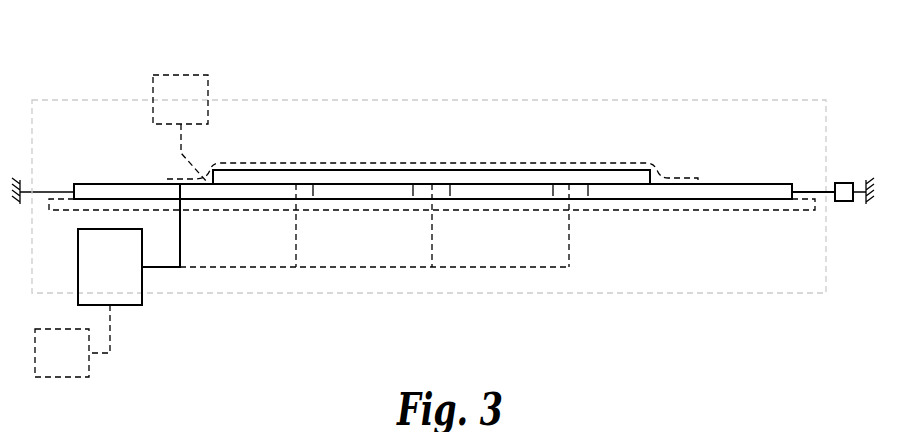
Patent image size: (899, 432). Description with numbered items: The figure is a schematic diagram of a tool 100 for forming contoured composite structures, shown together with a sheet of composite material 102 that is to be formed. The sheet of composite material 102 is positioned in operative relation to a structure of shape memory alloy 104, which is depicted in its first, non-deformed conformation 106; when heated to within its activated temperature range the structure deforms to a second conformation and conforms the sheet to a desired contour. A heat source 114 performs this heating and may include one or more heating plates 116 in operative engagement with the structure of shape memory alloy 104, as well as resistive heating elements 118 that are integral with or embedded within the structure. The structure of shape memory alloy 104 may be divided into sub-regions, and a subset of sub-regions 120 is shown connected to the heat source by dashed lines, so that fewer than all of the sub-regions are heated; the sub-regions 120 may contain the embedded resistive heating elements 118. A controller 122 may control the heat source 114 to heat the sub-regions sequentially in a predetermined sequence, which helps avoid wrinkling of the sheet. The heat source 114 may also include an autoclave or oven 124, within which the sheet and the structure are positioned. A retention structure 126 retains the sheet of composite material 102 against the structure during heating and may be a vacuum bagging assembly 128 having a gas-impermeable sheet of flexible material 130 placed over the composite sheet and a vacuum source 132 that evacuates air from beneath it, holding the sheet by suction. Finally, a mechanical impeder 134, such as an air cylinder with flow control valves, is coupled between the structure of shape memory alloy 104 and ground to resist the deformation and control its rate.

The tool 100 is at (697, 52).
The sheet of composite material 102 is at (607, 170).
The structure of shape memory alloy 104 is at (740, 184).
The first conformation 106 is at (713, 200).
The heat source 114 is at (130, 306).
The heating plate 116 is at (70, 212).
The resistive heating element 118 is at (305, 200).
The sub-regions 120 is at (266, 200).
The controller 122 is at (72, 378).
The autoclave or oven 124 is at (95, 100).
The retention structure 126 is at (267, 121).
The vacuum bagging assembly 128 is at (311, 144).
The gas-impermeable sheet of flexible material 130 is at (388, 163).
The vacuum source 132 is at (178, 75).
The mechanical impeder 134 is at (845, 183).